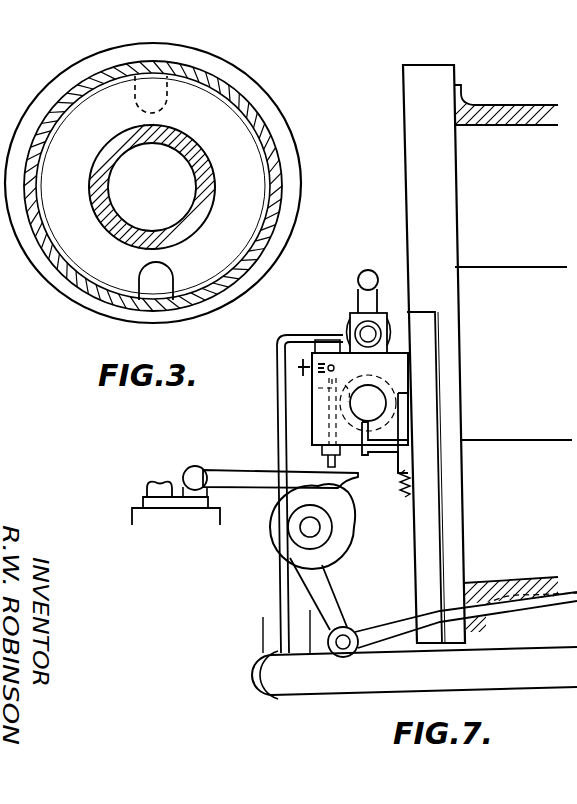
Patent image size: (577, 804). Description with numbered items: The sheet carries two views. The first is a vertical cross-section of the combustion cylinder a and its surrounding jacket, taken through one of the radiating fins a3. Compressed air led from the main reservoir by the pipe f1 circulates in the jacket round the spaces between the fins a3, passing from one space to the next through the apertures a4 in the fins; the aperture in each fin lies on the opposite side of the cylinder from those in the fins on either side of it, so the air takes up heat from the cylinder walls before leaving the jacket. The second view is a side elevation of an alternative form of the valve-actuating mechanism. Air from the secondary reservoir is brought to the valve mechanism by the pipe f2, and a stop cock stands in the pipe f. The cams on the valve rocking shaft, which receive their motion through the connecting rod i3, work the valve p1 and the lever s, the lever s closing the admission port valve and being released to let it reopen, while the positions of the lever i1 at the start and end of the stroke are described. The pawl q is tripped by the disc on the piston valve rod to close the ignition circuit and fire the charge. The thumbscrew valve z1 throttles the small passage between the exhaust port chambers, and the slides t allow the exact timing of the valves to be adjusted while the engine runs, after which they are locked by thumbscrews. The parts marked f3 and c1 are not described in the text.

In FIG. 3, the combustion cylinder a is at (152, 187).
In FIG. 7, the combustion cylinder a is at (490, 354).
In FIG. 3, the fins a3 is at (153, 183).
In FIG. 3, the apertures a4 is at (163, 77).
In FIG. 7, the pipe f is at (414, 654).
In FIG. 7, the pipe f1 is at (163, 483).
In FIG. 7, the pipe f2 is at (368, 272).
In FIG. 7, the valve wheel f3 is at (368, 403).
In FIG. 7, the thumbscrew valve z1 is at (300, 367).
In FIG. 7, the valve p1 is at (328, 410).
In FIG. 7, the pawl q is at (382, 445).
In FIG. 7, the lever s is at (243, 478).
In FIG. 7, the slides t is at (143, 505).
In FIG. 7, the cam wheel c1 is at (342, 533).
In FIG. 7, the lever i1 is at (324, 607).
In FIG. 7, the connecting rod i3 is at (518, 604).